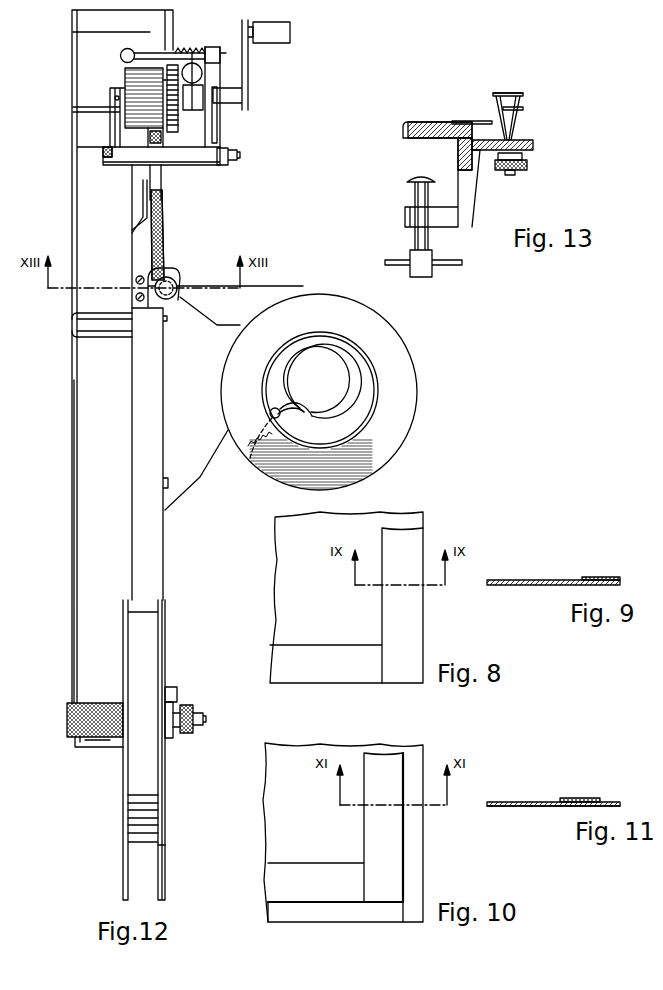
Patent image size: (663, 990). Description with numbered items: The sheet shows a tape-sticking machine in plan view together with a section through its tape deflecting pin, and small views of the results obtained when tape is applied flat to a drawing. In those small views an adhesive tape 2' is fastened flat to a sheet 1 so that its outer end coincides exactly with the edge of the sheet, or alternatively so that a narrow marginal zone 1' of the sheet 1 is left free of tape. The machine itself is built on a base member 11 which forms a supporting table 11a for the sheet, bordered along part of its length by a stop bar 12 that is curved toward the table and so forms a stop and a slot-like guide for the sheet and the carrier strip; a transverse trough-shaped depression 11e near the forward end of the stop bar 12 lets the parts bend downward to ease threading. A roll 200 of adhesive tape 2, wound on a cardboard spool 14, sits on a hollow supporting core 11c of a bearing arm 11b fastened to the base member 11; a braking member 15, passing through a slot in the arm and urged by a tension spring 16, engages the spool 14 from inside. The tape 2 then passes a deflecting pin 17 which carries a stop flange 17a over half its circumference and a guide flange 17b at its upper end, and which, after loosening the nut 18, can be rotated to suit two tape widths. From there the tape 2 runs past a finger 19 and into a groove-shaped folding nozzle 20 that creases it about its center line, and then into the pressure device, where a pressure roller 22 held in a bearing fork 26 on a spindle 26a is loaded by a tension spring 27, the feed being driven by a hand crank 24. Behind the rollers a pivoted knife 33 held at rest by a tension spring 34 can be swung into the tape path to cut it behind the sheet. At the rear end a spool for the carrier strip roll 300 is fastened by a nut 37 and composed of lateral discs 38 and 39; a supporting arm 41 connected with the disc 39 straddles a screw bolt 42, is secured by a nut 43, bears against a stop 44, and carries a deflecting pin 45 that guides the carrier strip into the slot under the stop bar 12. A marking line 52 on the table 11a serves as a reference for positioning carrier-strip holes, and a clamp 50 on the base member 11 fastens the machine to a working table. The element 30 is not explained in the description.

In FIG. 8, the sheet 1 is at (346, 584).
In FIG. 9, the sheet 1 is at (553, 569).
In FIG. 10, the sheet 1 is at (343, 820).
In FIG. 11, the sheet 1 is at (553, 788).
In FIG. 10, the marginal zone 1' is at (361, 910).
In FIG. 11, the marginal zone 1' is at (561, 790).
In FIG. 12, the adhesive tape 2 is at (172, 235).
In FIG. 8, the adhesive tape 2' is at (360, 616).
In FIG. 9, the adhesive tape 2' is at (601, 566).
In FIG. 10, the adhesive tape 2' is at (361, 849).
In FIG. 11, the adhesive tape 2' is at (580, 786).
In FIG. 12, the base member 11 is at (90, 210).
In FIG. 13, the base member 11 is at (405, 137).
In FIG. 12, the supporting table 11a is at (84, 397).
In FIG. 12, the bearing arm 11b is at (193, 463).
In FIG. 13, the bearing arm 11b is at (533, 146).
In FIG. 12, the hollow supporting core 11c is at (307, 360).
In FIG. 12, the trough-shaped depression 11e is at (76, 333).
In FIG. 12, the stop bar 12 is at (152, 541).
In FIG. 12, the spool 14 is at (378, 390).
In FIG. 12, the braking member 15 is at (300, 405).
In FIG. 12, the tension spring 16 is at (250, 458).
In FIG. 12, the deflecting pin 17 is at (178, 273).
In FIG. 13, the deflecting pin 17 is at (505, 93).
In FIG. 13, the stop flange 17a is at (523, 109).
In FIG. 13, the guide flange 17b is at (493, 93).
In FIG. 13, the nut 18 is at (524, 170).
In FIG. 12, the finger 19 is at (150, 245).
In FIG. 13, the finger 19 is at (482, 121).
In FIG. 12, the folding nozzle 20 is at (163, 185).
In FIG. 12, the pressure roller 22 is at (125, 76).
In FIG. 12, the hand crank 24 is at (272, 43).
In FIG. 12, the bearing fork 26 is at (112, 135).
In FIG. 12, the spindle 26a is at (238, 156).
In FIG. 12, the tension spring 27 is at (202, 74).
In FIG. 12, the plate 30 is at (214, 125).
In FIG. 12, the knife 33 is at (175, 53).
In FIG. 12, the tension spring 34 is at (198, 52).
In FIG. 12, the nut 37 is at (70, 737).
In FIG. 12, the lateral disc 38 is at (125, 848).
In FIG. 12, the lateral disc 39 is at (163, 848).
In FIG. 12, the supporting arm 41 is at (170, 738).
In FIG. 12, the screw bolt 42 is at (206, 718).
In FIG. 12, the nut 43 is at (193, 705).
In FIG. 12, the stop 44 is at (172, 690).
In FIG. 12, the deflecting pin 45 is at (103, 740).
In FIG. 13, the clamp 50 is at (415, 195).
In FIG. 12, the line 52 is at (87, 35).
In FIG. 12, the roll 200 is at (390, 342).
In FIG. 12, the roll 300 is at (147, 633).